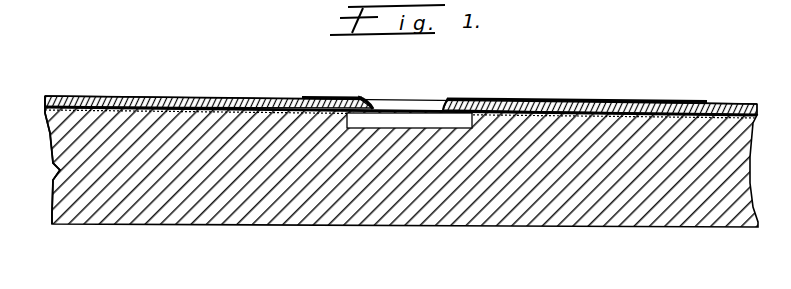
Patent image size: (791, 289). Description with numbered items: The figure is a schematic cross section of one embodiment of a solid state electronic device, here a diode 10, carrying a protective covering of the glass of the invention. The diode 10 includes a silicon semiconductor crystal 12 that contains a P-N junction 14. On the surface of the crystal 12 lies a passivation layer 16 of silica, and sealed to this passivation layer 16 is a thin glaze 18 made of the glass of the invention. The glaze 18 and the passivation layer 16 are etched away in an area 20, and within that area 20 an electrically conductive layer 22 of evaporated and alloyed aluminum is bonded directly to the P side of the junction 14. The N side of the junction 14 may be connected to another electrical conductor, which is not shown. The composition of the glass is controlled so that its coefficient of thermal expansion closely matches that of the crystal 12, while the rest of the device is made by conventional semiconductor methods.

The diode 10 is at (603, 177).
The silicon semiconductor crystal 12 is at (507, 201).
The P-N junction 14 is at (319, 99).
The passivation layer 16 is at (46, 130).
The glaze 18 is at (121, 96).
The area 20 is at (363, 99).
The electrically conductive layer 22 is at (504, 98).